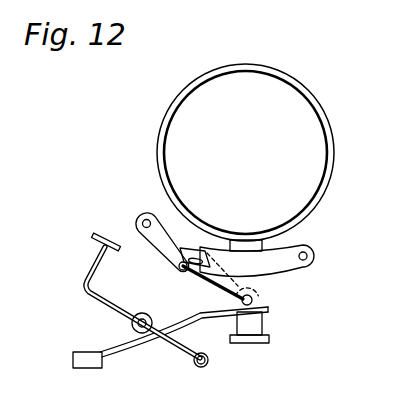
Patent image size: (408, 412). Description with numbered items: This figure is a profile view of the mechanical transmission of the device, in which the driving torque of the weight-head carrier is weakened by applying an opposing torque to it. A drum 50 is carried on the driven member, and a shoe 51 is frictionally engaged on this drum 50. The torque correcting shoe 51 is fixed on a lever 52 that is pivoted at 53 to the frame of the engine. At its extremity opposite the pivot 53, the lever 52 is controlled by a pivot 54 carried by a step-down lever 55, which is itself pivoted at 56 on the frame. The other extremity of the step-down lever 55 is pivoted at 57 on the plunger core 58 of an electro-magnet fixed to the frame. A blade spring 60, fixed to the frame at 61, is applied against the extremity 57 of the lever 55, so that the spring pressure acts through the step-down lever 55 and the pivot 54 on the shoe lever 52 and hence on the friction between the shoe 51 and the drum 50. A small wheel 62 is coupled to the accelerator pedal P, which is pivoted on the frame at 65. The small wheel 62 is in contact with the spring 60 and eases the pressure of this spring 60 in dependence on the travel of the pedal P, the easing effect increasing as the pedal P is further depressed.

The drum 50 is at (328, 125).
The shoe 51 is at (272, 239).
The lever 52 is at (272, 273).
The pivot 53 is at (308, 255).
The pivot 54 is at (181, 268).
The step-down lever 55 is at (158, 241).
The pivot 56 is at (146, 219).
The pivot 57 is at (254, 300).
The plunger core 58 is at (266, 325).
The blade spring 60 is at (199, 314).
The fixing point 61 is at (103, 362).
The small wheel 62 is at (132, 322).
The pivot 65 is at (203, 365).
The accelerator pedal P is at (105, 232).